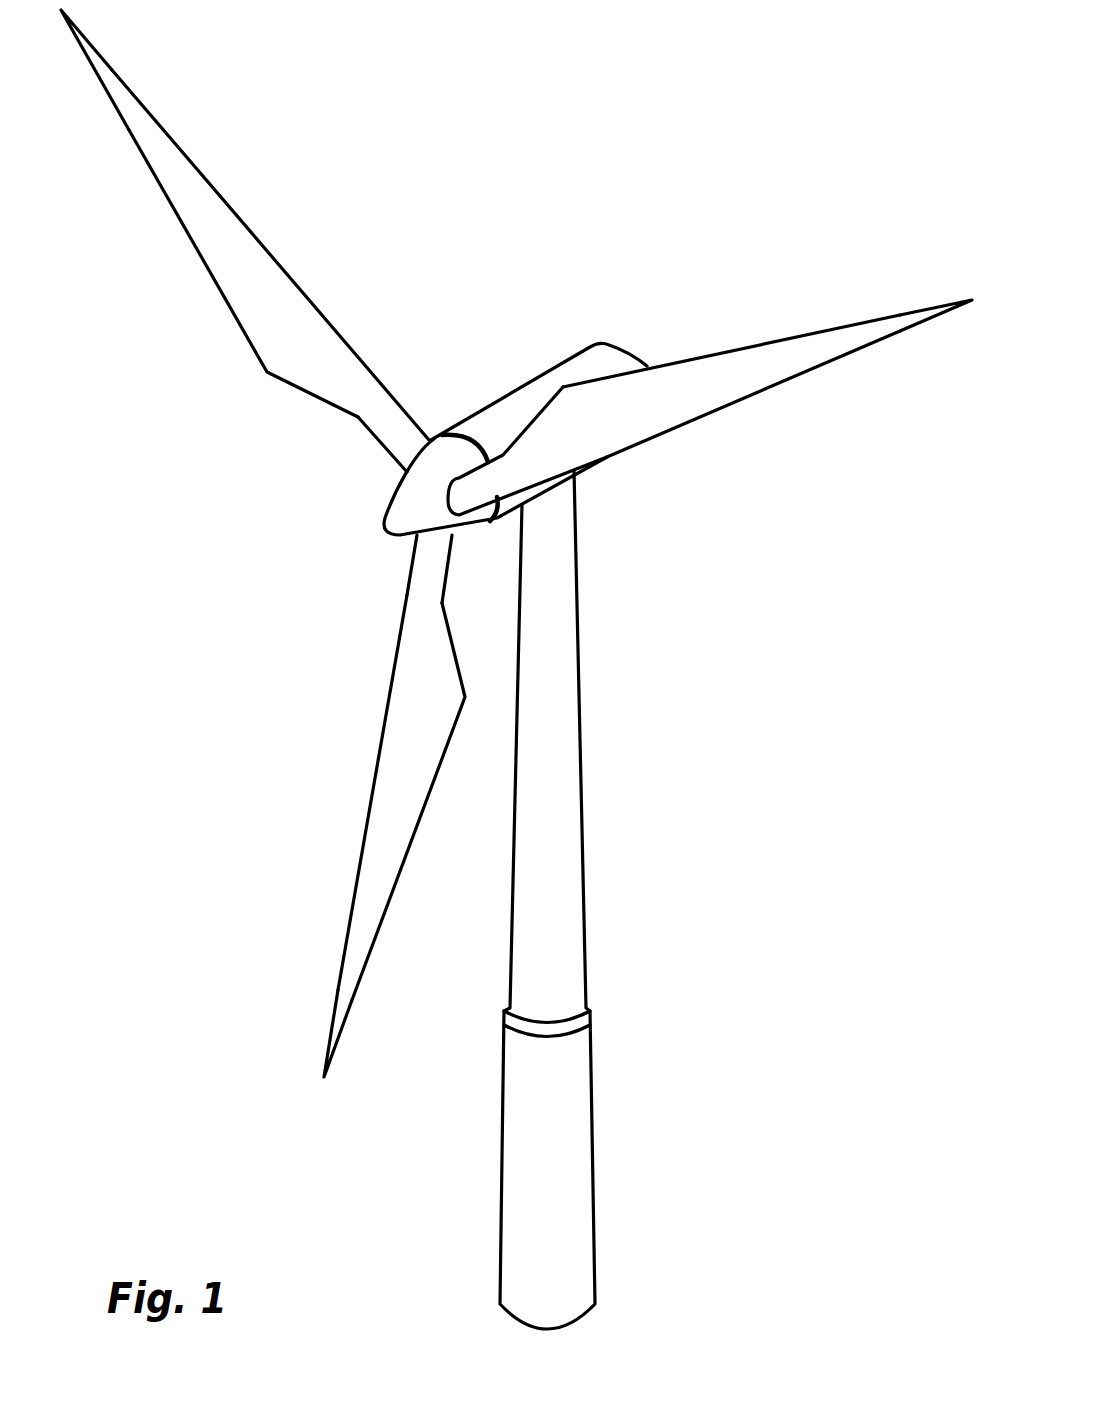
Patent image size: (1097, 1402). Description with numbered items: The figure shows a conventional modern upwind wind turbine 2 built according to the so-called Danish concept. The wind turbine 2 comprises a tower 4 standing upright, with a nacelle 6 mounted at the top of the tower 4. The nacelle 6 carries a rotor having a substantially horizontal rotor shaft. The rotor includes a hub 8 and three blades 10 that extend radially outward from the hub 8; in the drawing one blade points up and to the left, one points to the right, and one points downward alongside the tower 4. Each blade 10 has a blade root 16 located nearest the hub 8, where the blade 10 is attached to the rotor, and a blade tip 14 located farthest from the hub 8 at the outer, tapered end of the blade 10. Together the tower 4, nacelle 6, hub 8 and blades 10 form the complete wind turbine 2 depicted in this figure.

The wind turbine 2 is at (692, 831).
The tower 4 is at (567, 745).
The nacelle 6 is at (507, 412).
The hub 8 is at (403, 507).
The blades 10 is at (280, 340).
The blade tip 14 is at (105, 70).
The blade root 16 is at (413, 457).